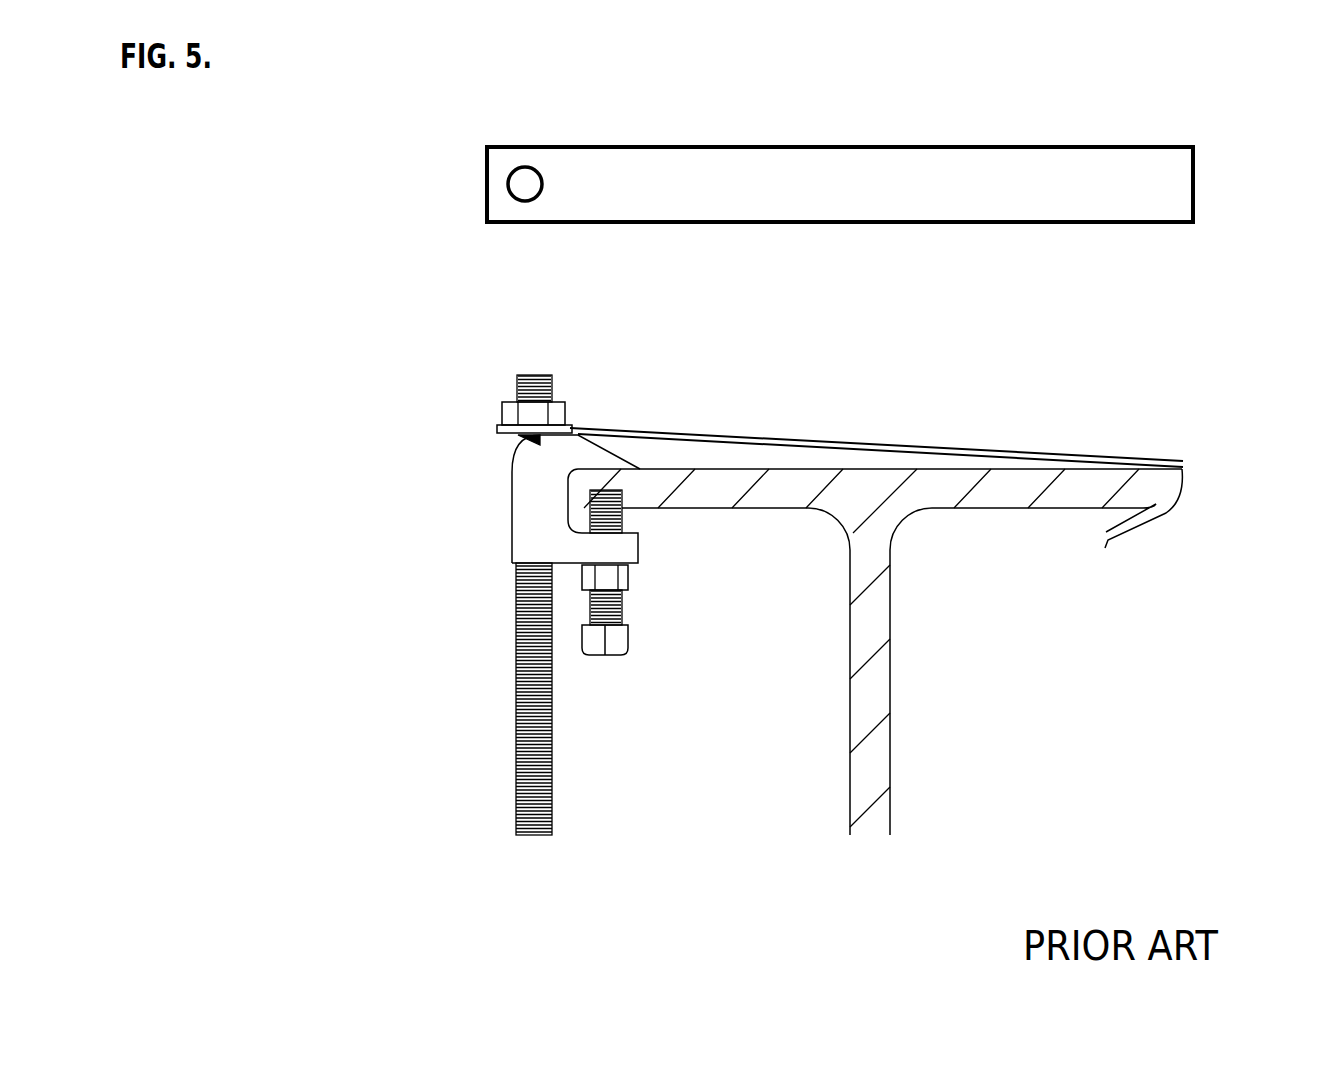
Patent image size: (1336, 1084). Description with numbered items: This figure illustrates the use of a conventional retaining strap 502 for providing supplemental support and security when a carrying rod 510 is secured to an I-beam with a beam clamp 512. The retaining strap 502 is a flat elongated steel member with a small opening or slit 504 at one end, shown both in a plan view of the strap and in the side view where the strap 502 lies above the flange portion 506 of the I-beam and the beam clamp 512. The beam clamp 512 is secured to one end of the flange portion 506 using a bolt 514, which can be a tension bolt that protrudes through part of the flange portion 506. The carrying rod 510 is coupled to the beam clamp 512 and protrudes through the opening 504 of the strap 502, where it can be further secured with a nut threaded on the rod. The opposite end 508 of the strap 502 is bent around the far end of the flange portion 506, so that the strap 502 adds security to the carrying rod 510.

The retaining strap 502 is at (1197, 186).
The opening 504 is at (545, 183).
The flange portion 506 is at (808, 463).
The end 508 is at (1105, 538).
The carrying rod 510 is at (538, 378).
The beam clamp 512 is at (520, 488).
The bolt 514 is at (620, 605).